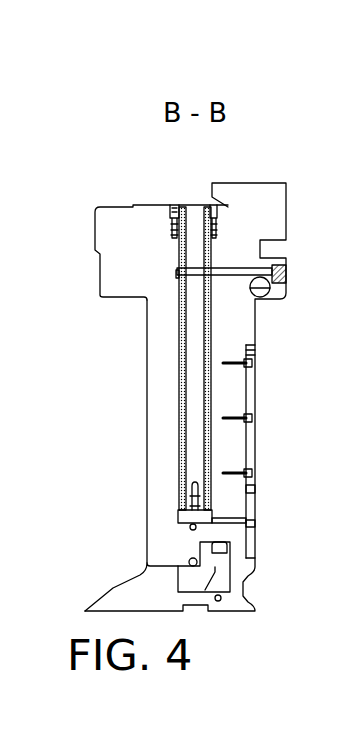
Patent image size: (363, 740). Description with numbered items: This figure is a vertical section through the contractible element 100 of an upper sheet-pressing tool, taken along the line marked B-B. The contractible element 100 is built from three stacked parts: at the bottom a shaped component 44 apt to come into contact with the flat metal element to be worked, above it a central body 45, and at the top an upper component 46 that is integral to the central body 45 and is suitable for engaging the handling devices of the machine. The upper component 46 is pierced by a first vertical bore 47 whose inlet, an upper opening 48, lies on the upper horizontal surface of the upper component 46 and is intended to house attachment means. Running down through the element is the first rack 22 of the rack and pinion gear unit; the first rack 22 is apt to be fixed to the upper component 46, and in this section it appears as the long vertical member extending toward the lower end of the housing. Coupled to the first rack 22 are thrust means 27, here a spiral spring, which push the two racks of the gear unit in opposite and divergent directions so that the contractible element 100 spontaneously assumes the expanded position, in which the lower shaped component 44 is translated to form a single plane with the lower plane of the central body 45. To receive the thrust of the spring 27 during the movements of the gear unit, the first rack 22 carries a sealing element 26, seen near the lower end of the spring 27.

The contractible element 100 is at (284, 134).
The first rack 22 is at (253, 266).
The sealing element 26 is at (185, 515).
The thrust means 27 is at (180, 410).
The shaped component 44 is at (132, 593).
The central body 45 is at (165, 329).
The upper component 46 is at (108, 217).
The first vertical bore 47 is at (197, 196).
The upper opening 48 is at (175, 213).